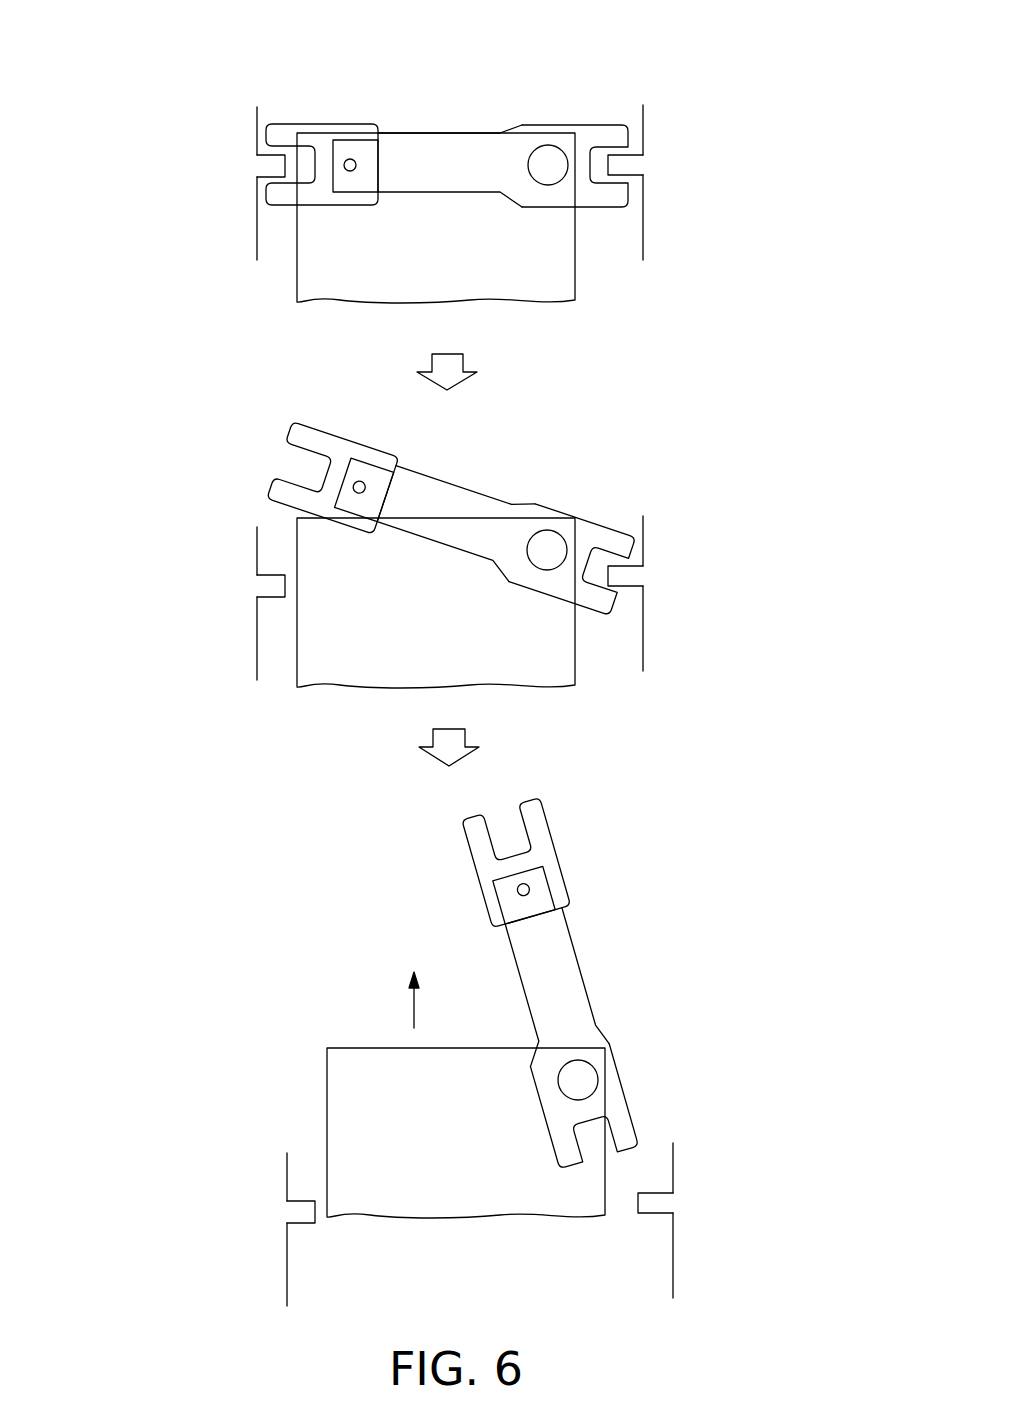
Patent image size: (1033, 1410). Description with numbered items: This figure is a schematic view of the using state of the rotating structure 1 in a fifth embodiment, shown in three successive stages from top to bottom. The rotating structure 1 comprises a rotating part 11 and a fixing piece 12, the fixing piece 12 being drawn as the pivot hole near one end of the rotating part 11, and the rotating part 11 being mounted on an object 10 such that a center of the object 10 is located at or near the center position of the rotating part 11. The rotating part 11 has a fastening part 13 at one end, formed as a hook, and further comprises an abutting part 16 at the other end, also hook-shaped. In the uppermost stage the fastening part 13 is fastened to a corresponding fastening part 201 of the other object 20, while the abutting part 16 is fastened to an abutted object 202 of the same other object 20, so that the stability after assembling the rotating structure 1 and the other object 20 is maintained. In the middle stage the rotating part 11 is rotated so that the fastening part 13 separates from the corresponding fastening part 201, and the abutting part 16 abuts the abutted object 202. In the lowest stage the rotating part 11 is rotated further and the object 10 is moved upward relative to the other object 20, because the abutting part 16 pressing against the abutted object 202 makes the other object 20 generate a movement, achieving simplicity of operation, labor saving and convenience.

The rotating structure 1 is at (294, 110).
The object 10 is at (306, 258).
The rotating part 11 is at (426, 133).
The fixing piece 12 is at (548, 145).
The fastening part 13 is at (323, 124).
The abutting part 16 is at (616, 135).
The other object 20 is at (643, 118).
The corresponding fastening part 201 is at (277, 165).
The abutted object 202 is at (616, 172).